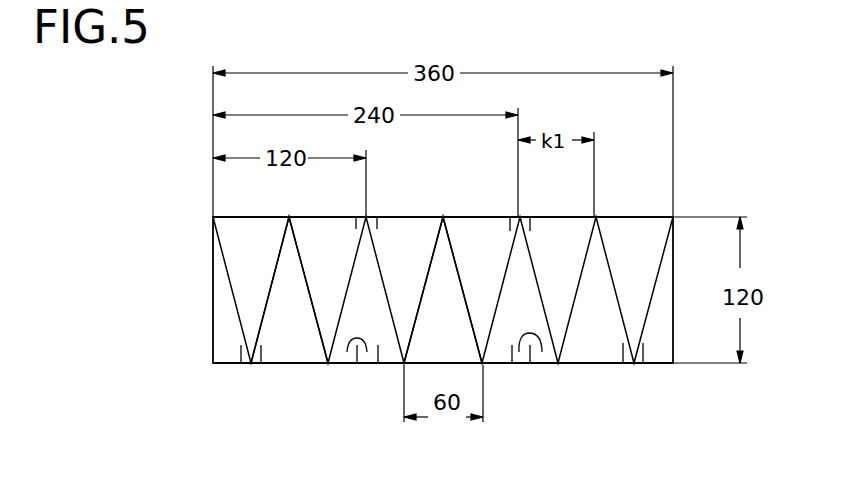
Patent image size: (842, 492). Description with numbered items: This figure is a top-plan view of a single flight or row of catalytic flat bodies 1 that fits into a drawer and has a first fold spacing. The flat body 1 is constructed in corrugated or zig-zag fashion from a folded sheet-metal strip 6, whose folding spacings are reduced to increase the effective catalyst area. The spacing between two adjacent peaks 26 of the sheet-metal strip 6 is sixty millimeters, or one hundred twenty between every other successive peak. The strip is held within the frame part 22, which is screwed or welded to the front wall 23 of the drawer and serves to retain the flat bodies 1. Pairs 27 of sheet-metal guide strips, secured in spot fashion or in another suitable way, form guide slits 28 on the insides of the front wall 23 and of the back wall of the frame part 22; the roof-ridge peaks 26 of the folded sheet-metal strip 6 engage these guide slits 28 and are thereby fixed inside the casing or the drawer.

The flat body 1 is at (452, 238).
The sheet-metal strip 6 is at (612, 217).
The frame part 22 is at (538, 214).
The front wall 23 is at (290, 363).
The peaks 26 is at (289, 217).
The pairs of sheet-metal guide strips 27 is at (266, 363).
The guide slits 28 is at (347, 363).